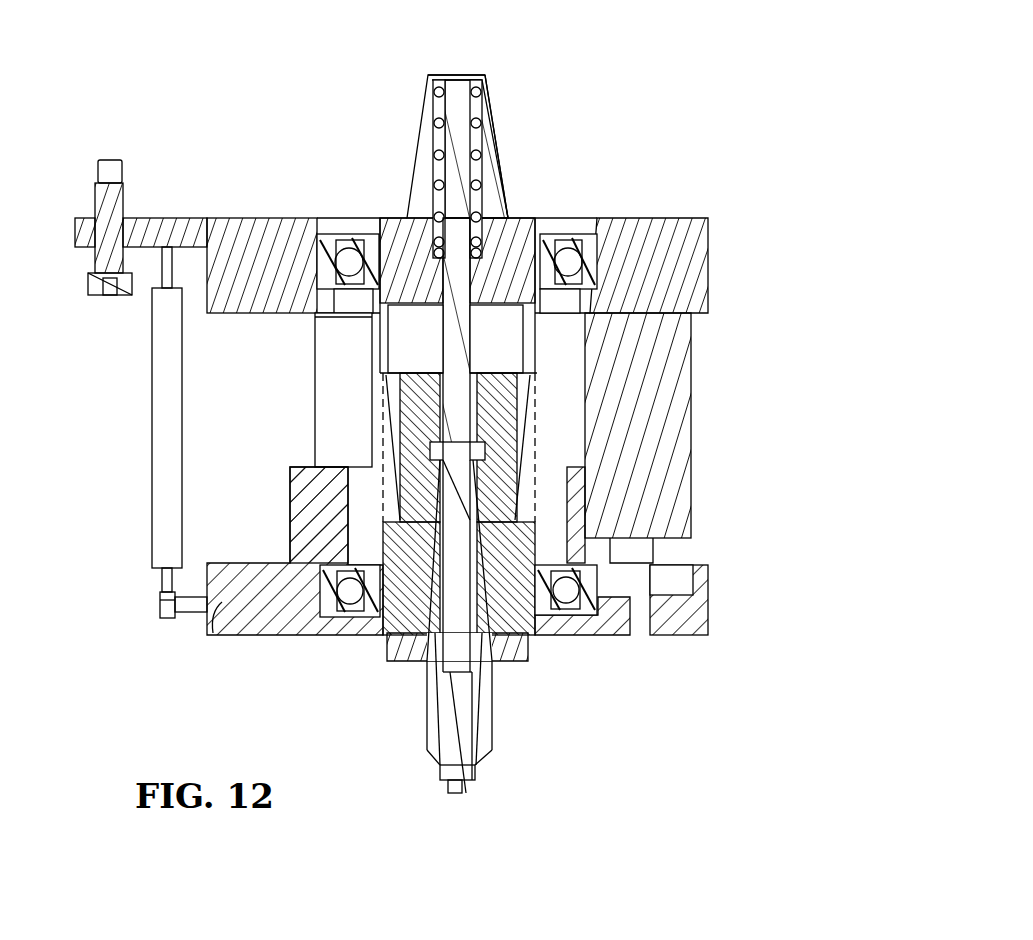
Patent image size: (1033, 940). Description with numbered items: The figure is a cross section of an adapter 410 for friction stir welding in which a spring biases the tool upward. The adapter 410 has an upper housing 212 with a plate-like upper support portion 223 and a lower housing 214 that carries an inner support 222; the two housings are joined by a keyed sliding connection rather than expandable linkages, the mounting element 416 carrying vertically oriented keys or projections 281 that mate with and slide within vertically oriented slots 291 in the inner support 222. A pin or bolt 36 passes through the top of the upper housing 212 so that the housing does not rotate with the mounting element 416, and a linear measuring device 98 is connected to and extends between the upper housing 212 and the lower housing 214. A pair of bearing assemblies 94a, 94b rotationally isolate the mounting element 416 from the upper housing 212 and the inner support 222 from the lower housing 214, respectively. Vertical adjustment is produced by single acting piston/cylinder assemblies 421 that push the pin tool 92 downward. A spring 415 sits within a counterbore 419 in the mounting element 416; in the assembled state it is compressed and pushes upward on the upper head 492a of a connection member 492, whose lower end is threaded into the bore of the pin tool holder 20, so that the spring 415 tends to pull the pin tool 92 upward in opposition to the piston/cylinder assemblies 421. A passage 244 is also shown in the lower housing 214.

The adapter 410 is at (694, 65).
The upper housing 212 is at (740, 190).
The lower housing 214 is at (724, 646).
The upper support portion 223 is at (703, 272).
The inner support 222 is at (363, 635).
The pin or bolt 36 is at (112, 207).
The linear measuring device 98 is at (163, 406).
The bearing assembly 94a is at (350, 250).
The bearing assembly 94b is at (565, 595).
The connection member 492 is at (492, 108).
The upper head 492a is at (450, 80).
The spring 415 is at (477, 137).
The counterbore 419 is at (433, 170).
The mounting element 416 is at (493, 183).
The single acting piston/cylinder assemblies 421 is at (662, 422).
The keys or projections 281 is at (537, 398).
The slots 291 is at (525, 535).
The passage 244 is at (222, 605).
The pin tool holder 20 is at (478, 712).
The pin tool 92 is at (458, 790).